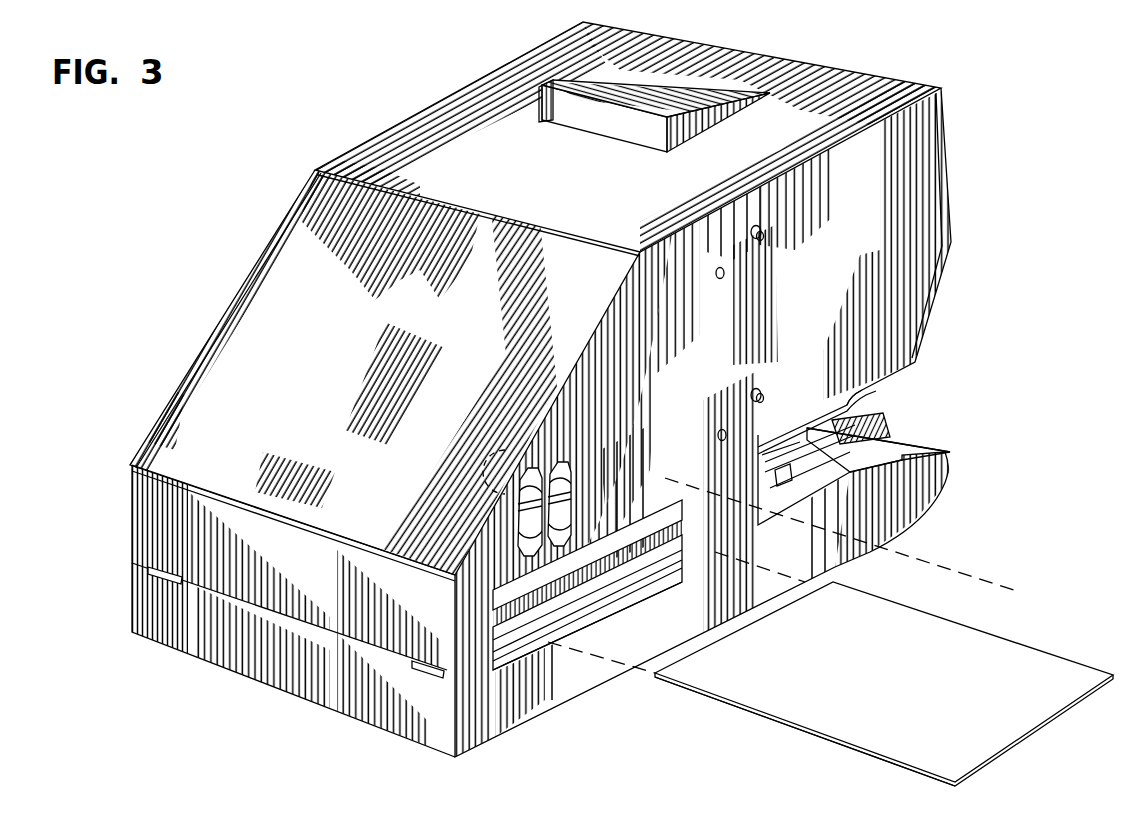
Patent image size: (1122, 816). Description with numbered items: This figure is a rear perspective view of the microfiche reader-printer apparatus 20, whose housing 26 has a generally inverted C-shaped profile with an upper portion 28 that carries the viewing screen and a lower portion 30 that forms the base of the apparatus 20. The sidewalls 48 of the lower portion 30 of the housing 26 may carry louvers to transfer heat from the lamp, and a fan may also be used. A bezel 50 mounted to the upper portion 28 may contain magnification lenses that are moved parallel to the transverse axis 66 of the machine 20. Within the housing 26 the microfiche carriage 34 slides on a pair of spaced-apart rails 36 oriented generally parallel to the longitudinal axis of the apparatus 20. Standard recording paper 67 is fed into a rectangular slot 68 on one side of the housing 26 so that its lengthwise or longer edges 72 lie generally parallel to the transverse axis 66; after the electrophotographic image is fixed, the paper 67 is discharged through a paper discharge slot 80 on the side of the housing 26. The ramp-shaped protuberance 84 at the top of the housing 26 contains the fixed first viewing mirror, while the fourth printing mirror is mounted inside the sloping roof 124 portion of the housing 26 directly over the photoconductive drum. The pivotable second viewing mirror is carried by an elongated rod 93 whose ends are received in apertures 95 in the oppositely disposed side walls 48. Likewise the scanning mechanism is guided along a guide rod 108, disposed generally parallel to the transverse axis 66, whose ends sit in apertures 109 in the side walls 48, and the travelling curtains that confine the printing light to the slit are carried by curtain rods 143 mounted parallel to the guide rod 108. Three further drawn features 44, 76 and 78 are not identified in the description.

The microfiche reader-printer apparatus 20 is at (1057, 251).
The housing 26 is at (356, 720).
The upper portion 28 is at (907, 196).
The lower portion 30 is at (938, 472).
The microfiche carriage 34 is at (868, 428).
The rails 36 is at (815, 478).
The paper support plate 44 is at (880, 446).
The sidewalls 48 is at (372, 141).
The bezel 50 is at (866, 393).
The transverse axis 66 is at (988, 585).
The recording paper 67 is at (1025, 645).
The rectangular slot 68 is at (540, 640).
The longer edges 72 is at (832, 740).
The fan 76 is at (497, 449).
The fan grille openings 78 is at (564, 479).
The paper discharge slot 80 is at (617, 531).
The ramp-shaped protuberance 84 is at (667, 92).
The elongated rod 93 is at (763, 232).
The apertures 95 is at (762, 242).
The guide rod 108 is at (761, 393).
The apertures 109 is at (753, 393).
The sloping roof 124 is at (480, 381).
The curtain rods 143 is at (717, 279).